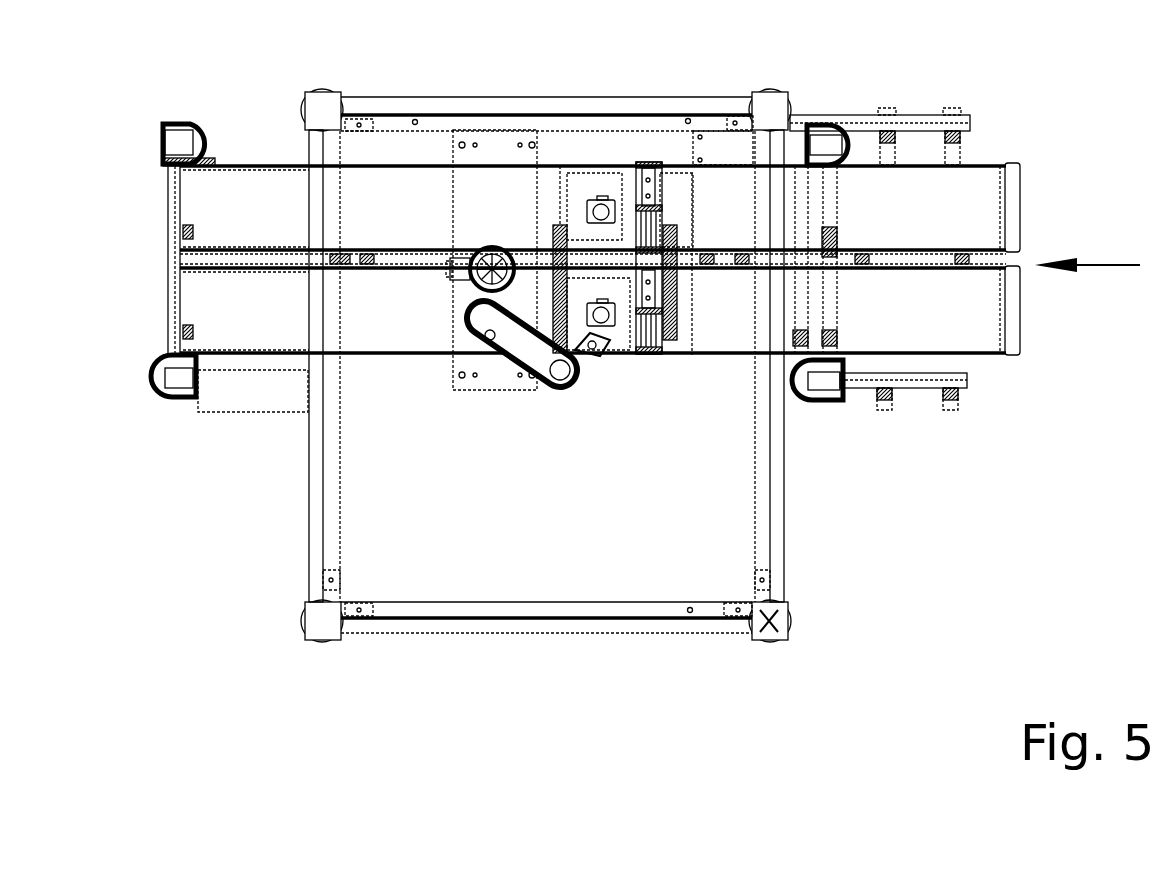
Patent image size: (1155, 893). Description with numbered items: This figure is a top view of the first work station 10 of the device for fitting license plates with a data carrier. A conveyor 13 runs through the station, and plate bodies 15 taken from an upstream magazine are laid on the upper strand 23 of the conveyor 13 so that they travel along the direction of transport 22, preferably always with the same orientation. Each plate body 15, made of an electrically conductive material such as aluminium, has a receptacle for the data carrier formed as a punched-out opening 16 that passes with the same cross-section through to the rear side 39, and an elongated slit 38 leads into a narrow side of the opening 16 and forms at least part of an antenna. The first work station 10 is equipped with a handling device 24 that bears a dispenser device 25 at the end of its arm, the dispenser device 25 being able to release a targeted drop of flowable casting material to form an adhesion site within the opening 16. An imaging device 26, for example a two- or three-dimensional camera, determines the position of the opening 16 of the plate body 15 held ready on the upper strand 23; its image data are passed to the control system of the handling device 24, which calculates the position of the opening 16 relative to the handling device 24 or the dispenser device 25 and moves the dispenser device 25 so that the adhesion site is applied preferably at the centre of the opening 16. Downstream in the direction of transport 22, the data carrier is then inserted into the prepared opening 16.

The first work station 10 is at (233, 512).
The conveyor 13 is at (985, 193).
The plate body 15 is at (783, 248).
The opening 16 is at (620, 200).
The direction of transport 22 is at (1083, 265).
The upper strand 23 is at (276, 214).
The handling device 24 is at (530, 353).
The dispenser device 25 is at (607, 353).
The imaging device 26 is at (575, 243).
The slit 38 is at (583, 240).
The rear side 39 is at (680, 195).